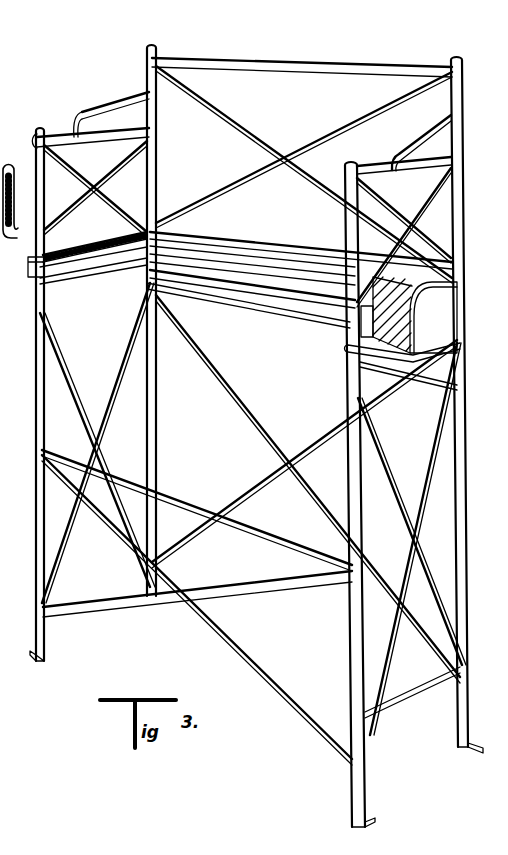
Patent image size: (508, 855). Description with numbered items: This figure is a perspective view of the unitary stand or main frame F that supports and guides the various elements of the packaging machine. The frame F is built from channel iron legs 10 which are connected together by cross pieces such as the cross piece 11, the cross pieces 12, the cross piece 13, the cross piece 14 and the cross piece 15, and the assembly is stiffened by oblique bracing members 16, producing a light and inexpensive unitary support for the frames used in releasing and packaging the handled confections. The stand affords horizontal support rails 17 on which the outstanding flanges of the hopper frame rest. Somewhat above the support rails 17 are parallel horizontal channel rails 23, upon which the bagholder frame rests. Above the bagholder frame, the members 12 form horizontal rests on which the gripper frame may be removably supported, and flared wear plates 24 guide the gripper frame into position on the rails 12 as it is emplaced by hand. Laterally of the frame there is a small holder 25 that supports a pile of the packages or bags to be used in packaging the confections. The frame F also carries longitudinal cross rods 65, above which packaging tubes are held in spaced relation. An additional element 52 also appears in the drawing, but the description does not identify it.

The channel iron legs 10 is at (38, 555).
The cross piece 11 is at (197, 503).
The cross piece 12 is at (56, 136).
The cross piece 13 is at (47, 283).
The cross piece 14 is at (275, 236).
The cross piece 15 is at (300, 66).
The oblique bracing member 16 is at (107, 386).
The horizontal support rail 17 is at (72, 286).
The horizontal channel rail 23 is at (85, 253).
The flared wear plate 24 is at (125, 92).
The holder 25 is at (438, 326).
The hook 52 is at (16, 236).
The longitudinal cross rod 65 is at (258, 293).
The main frame F is at (467, 436).